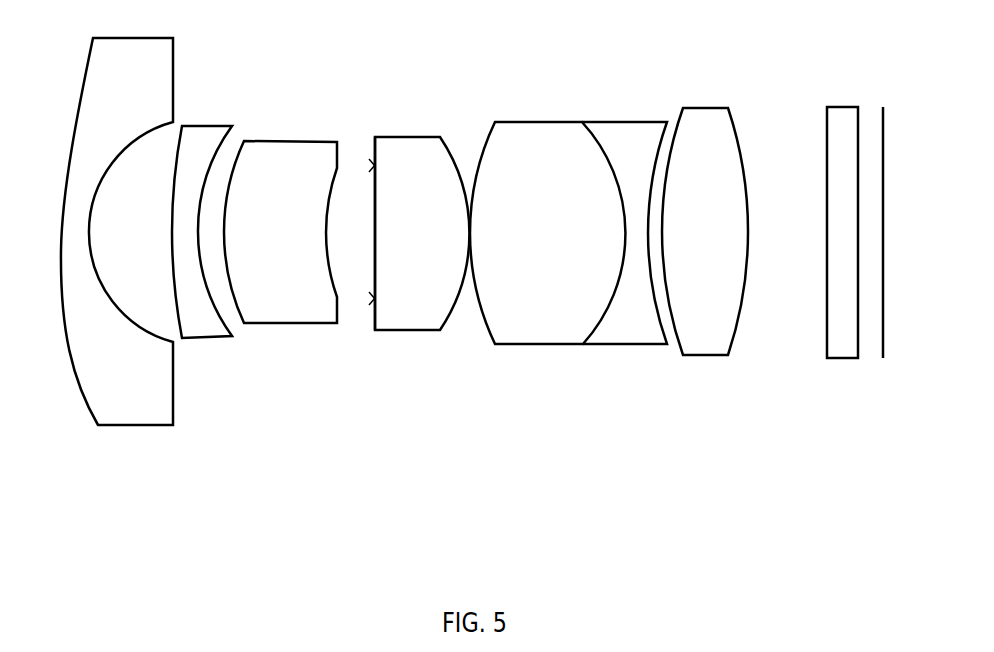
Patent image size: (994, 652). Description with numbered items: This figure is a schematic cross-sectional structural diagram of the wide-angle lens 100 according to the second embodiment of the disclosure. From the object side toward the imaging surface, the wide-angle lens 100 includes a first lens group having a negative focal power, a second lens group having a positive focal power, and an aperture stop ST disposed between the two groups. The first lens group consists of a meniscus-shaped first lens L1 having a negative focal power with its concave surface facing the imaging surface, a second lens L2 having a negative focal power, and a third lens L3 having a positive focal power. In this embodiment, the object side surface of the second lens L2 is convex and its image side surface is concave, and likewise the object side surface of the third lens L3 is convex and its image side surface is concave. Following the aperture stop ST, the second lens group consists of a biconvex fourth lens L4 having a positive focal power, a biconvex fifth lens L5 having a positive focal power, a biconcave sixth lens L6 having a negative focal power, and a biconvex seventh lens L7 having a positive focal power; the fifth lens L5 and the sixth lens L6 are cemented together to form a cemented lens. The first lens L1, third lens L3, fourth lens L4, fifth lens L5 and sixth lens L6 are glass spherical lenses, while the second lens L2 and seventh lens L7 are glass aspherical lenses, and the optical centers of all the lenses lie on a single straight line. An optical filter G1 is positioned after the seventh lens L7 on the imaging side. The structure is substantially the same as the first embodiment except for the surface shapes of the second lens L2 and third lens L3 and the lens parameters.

The wide-angle lens 100 is at (508, 63).
The first lens L1 is at (138, 400).
The second lens L2 is at (205, 327).
The third lens L3 is at (313, 305).
The aperture stop ST is at (373, 295).
The fourth lens L4 is at (428, 302).
The fifth lens L5 is at (555, 310).
The sixth lens L6 is at (612, 327).
The seventh lens L7 is at (700, 315).
The optical filter G1 is at (845, 333).